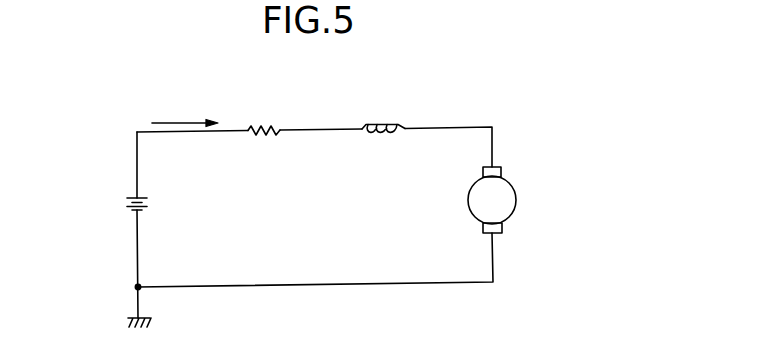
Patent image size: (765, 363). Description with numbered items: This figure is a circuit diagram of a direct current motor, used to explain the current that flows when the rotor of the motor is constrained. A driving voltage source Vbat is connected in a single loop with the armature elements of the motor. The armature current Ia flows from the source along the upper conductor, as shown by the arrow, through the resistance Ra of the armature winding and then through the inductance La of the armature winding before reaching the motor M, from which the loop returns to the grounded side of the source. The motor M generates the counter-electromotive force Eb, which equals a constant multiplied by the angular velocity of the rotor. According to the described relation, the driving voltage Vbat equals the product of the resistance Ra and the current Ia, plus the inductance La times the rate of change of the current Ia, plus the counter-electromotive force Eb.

The driving voltage Vbat is at (116, 205).
The armature current Ia is at (185, 112).
The armature winding resistance Ra is at (264, 116).
The armature winding inductance La is at (400, 117).
The direct current motor M is at (492, 200).
The counter-electromotive force Eb is at (584, 199).